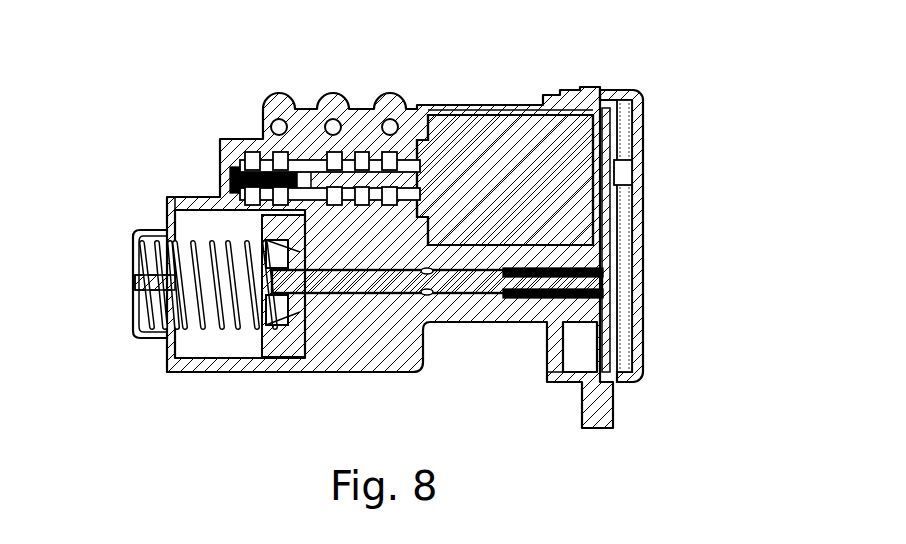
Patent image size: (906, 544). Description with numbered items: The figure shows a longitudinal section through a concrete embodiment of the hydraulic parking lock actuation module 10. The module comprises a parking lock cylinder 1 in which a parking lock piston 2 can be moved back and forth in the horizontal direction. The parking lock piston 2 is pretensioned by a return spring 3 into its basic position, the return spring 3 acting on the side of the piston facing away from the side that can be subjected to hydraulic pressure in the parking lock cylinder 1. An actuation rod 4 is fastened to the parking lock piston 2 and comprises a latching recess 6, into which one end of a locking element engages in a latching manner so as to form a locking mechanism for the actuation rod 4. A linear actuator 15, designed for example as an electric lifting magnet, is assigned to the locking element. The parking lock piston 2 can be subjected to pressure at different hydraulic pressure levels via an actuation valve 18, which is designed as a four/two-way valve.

The parking lock cylinder 1 is at (181, 373).
The parking lock piston 2 is at (287, 350).
The return spring 3 is at (213, 243).
The actuation rod 4 is at (357, 288).
The latching recess 6 is at (428, 262).
The hydraulic parking lock actuation module 10 is at (430, 228).
The linear actuator 15 is at (563, 175).
The actuation valve 18 is at (360, 148).